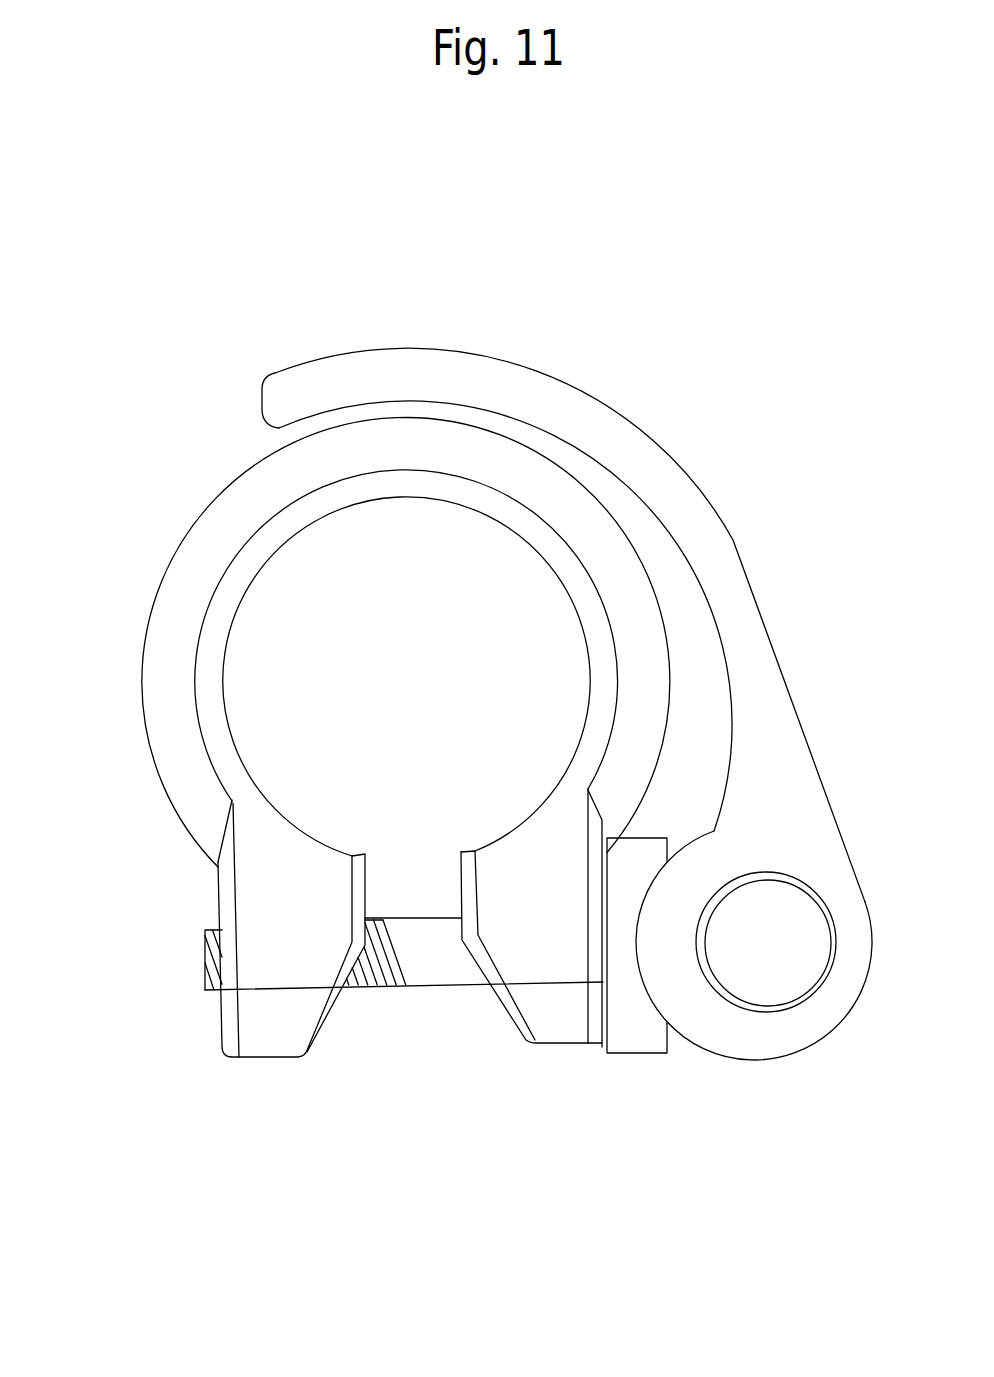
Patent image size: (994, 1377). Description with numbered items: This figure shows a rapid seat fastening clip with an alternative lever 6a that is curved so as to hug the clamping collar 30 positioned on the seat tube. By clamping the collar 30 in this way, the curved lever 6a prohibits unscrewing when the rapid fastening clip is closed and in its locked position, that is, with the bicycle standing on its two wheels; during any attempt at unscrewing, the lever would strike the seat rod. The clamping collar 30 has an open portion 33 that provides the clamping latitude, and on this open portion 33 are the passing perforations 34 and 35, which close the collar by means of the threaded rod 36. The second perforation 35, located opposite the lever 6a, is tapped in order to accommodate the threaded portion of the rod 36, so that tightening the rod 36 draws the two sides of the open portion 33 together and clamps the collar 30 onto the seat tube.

The lever 6a is at (567, 661).
The clamping collar 30 is at (406, 539).
The open portion 33 is at (404, 1123).
The passing perforation 34 is at (584, 1058).
The second perforation 35 is at (212, 1064).
The threaded rod 36 is at (323, 1124).